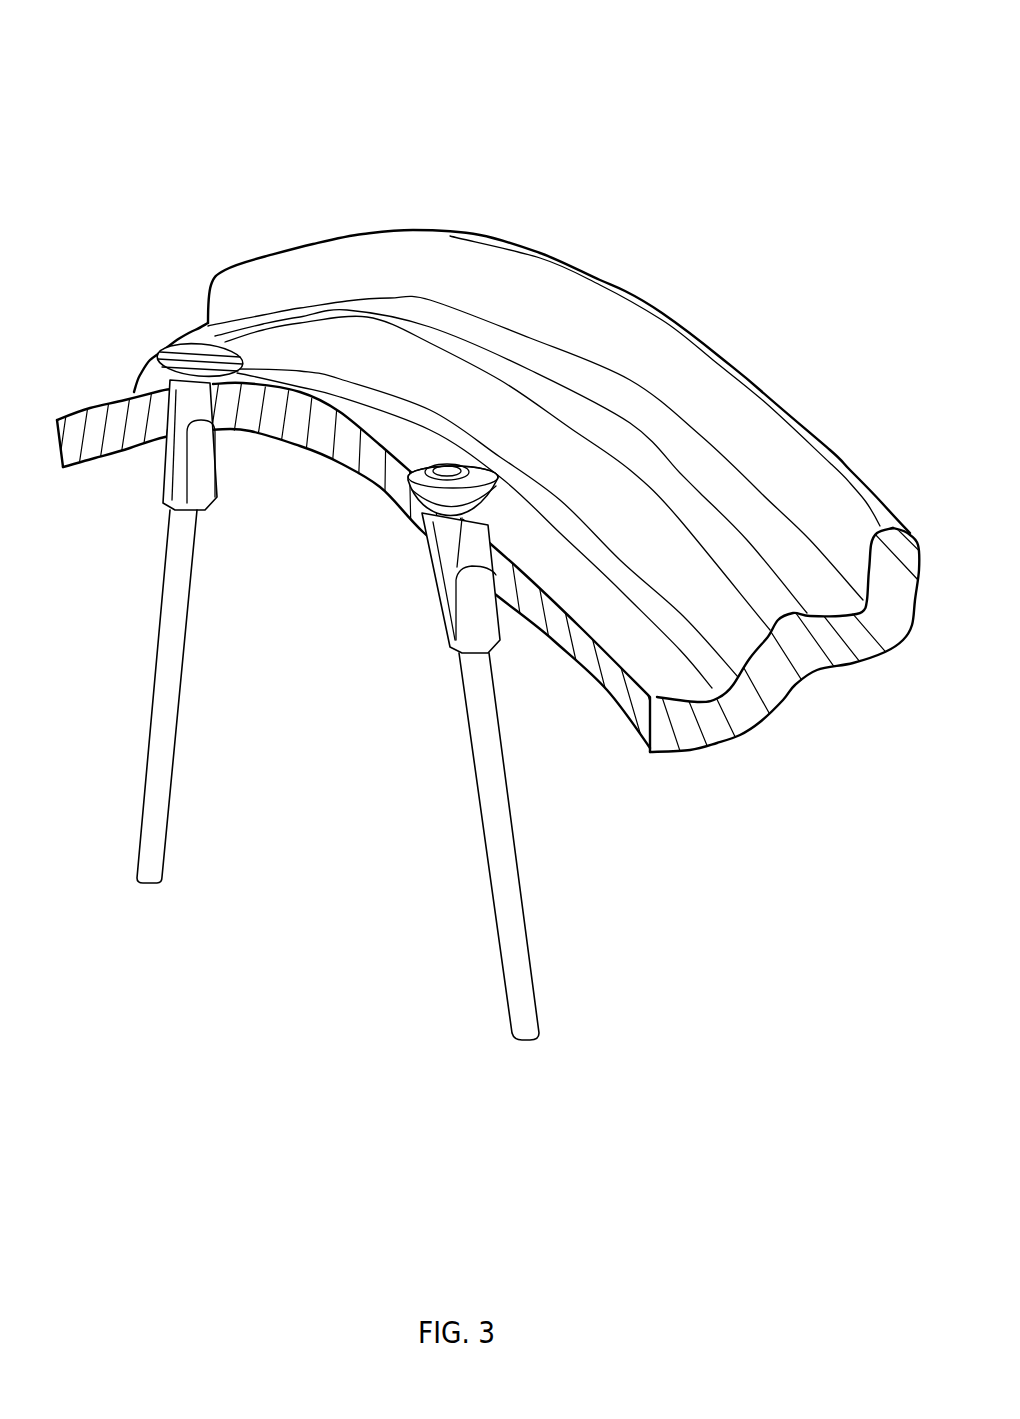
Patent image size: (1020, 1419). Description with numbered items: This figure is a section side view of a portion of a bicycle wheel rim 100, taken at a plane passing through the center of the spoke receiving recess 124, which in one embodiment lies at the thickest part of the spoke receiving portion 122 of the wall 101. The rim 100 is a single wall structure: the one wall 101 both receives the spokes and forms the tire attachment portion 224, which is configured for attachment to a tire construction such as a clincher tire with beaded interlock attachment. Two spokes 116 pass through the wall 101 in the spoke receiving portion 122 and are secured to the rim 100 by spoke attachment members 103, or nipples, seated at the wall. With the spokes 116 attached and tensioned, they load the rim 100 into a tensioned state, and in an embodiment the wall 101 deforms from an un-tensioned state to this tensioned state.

The rim 100 is at (535, 424).
The wall 101 is at (697, 723).
The spoke attachment member 103 is at (185, 342).
The spoke 116 is at (163, 640).
The spoke receiving portion 122 is at (408, 452).
The spoke receiving recess 124 is at (594, 610).
The tire attachment portion 224 is at (646, 397).